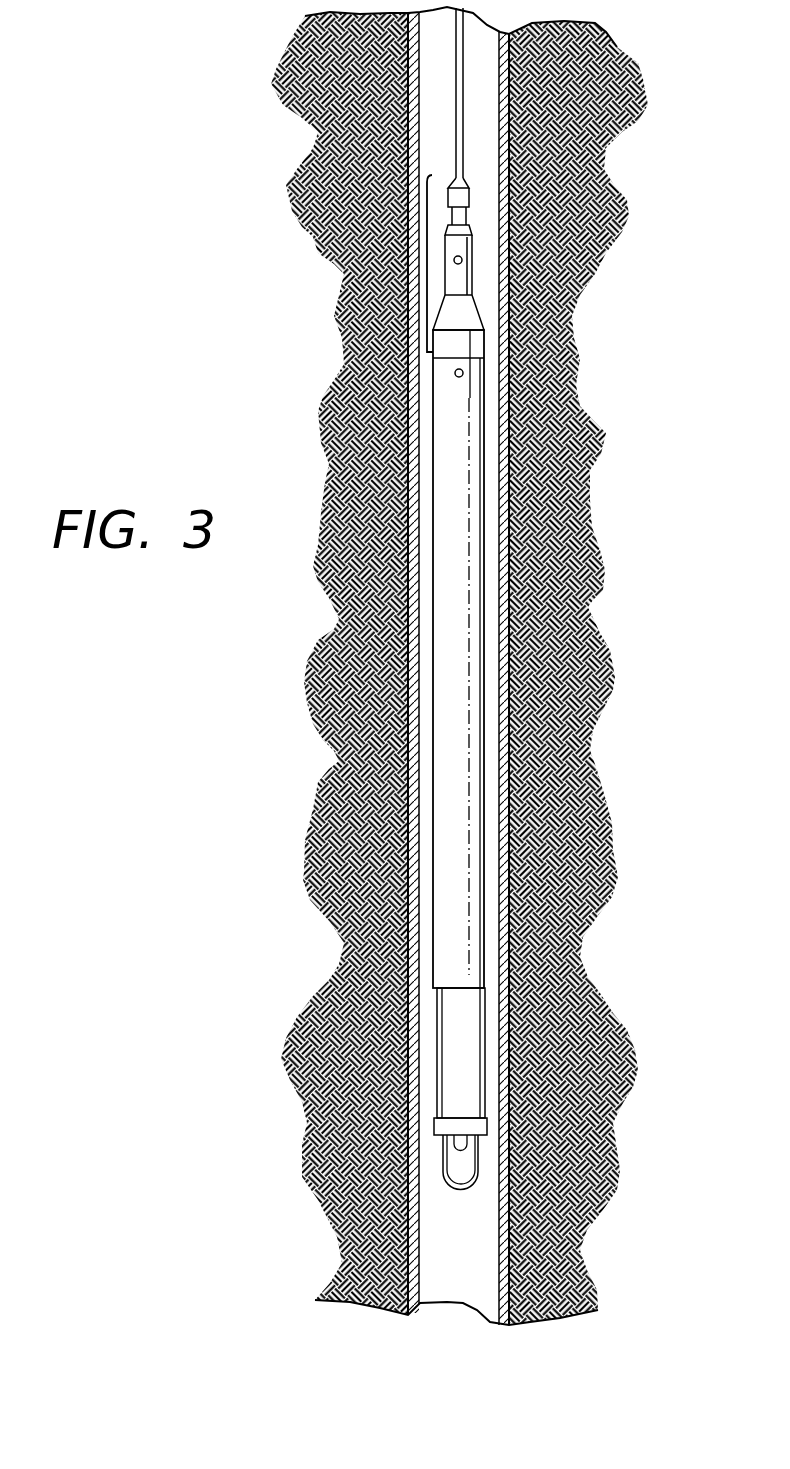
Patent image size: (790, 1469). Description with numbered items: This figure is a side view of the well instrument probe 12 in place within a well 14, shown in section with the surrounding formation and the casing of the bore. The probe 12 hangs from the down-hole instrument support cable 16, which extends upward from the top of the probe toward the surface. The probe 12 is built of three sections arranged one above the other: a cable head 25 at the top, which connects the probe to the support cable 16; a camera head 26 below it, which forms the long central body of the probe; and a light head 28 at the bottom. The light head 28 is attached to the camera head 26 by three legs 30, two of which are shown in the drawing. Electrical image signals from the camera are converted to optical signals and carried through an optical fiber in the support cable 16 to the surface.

The well instrument probe 12 is at (469, 684).
The well 14 is at (500, 88).
The down-hole instrument support cable 16 is at (455, 136).
The cable head 25 is at (432, 262).
The camera head 26 is at (457, 632).
The light head 28 is at (460, 1128).
The legs 30 is at (440, 1057).